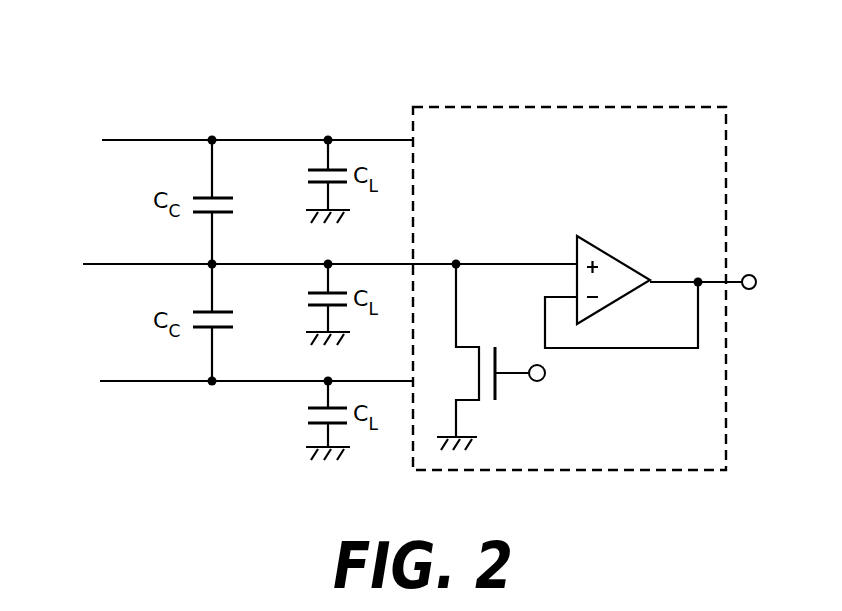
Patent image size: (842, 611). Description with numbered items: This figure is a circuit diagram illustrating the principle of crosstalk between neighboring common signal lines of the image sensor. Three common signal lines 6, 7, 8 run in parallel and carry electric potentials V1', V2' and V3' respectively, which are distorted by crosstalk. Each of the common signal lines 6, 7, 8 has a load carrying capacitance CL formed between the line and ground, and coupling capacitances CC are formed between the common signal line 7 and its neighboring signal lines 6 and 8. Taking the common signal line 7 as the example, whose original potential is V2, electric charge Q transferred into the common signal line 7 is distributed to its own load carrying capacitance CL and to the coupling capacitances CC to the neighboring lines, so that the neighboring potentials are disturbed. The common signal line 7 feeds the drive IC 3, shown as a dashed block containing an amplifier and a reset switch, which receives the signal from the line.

The drive IC 3 is at (642, 107).
The common signal line 6 is at (150, 138).
The common signal line 7 is at (110, 263).
The common signal line 8 is at (145, 383).